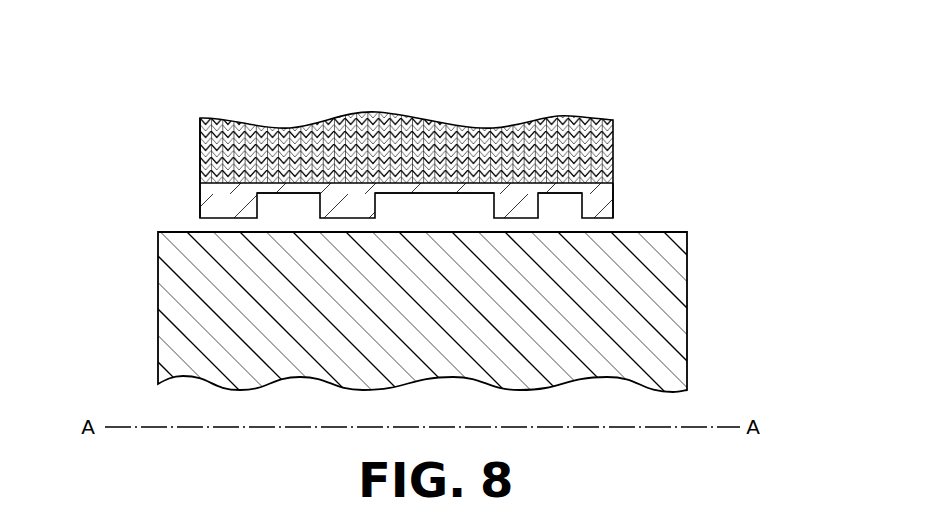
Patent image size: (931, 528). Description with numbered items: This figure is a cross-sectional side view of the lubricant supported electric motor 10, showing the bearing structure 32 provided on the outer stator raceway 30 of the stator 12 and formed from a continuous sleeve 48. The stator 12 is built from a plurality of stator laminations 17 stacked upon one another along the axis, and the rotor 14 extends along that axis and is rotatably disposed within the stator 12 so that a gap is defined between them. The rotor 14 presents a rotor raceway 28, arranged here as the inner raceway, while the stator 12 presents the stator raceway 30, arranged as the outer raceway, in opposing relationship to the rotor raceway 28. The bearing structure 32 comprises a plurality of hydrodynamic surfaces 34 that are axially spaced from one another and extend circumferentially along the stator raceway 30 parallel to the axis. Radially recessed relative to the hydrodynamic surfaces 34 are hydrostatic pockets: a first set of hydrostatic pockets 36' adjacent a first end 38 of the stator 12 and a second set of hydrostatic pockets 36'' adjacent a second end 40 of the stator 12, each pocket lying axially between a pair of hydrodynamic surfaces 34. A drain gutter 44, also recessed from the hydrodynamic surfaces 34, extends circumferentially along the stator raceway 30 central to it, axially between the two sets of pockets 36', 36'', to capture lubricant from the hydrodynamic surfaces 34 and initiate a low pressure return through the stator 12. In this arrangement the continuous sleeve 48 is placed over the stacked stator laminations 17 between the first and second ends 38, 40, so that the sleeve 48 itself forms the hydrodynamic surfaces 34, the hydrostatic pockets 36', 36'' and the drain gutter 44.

The lubricant supported electric motor 10 is at (721, 126).
The stator 12 is at (615, 143).
The rotor 14 is at (688, 271).
The stator laminations 17 is at (250, 122).
The rotor raceway 28 is at (674, 232).
The stator raceway 30 is at (210, 225).
The bearing structure 32 is at (628, 203).
The hydrodynamic surfaces 34 is at (343, 218).
The first set of hydrostatic pockets 36' is at (288, 240).
The second set of hydrostatic pockets 36'' is at (564, 242).
The first end of the stator 38 is at (200, 208).
The second end of the stator 40 is at (615, 168).
The drain gutter 44 is at (443, 193).
The continuous sleeve 48 is at (197, 187).